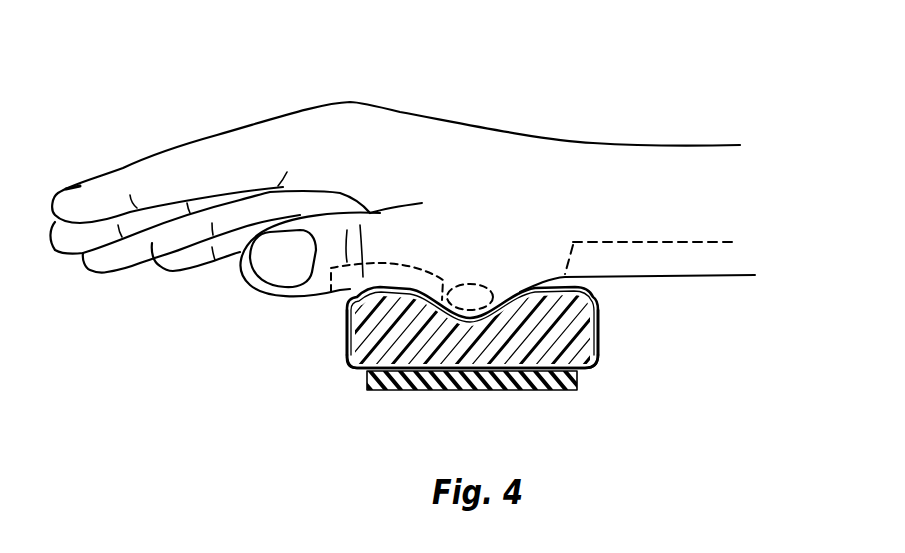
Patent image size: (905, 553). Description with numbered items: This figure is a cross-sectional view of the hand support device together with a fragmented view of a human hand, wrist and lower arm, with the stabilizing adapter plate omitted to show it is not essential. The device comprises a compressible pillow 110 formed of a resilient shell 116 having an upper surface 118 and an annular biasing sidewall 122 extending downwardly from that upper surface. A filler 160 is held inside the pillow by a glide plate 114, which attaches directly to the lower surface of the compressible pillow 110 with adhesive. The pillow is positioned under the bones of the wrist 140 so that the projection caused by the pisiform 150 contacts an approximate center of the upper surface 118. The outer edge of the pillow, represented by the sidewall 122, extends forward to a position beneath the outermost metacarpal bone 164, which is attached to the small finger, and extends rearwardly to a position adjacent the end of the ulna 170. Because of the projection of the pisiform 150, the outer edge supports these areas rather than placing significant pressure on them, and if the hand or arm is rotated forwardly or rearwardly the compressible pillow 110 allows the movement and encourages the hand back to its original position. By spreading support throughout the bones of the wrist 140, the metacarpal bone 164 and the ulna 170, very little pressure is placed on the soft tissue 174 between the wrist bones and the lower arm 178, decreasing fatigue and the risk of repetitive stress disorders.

The compressible pillow 110 is at (347, 305).
The glide plate 114 is at (490, 370).
The resilient shell 116 is at (347, 357).
The upper surface 118 is at (577, 283).
The annular biasing sidewall 122 is at (347, 325).
The bones of the wrist 140 is at (507, 132).
The pisiform 150 is at (470, 293).
The filler 160 is at (427, 355).
The outermost metacarpal bone 164 is at (383, 275).
The ulna 170 is at (680, 262).
The soft tissue 174 is at (575, 212).
The lower arm 178 is at (693, 163).